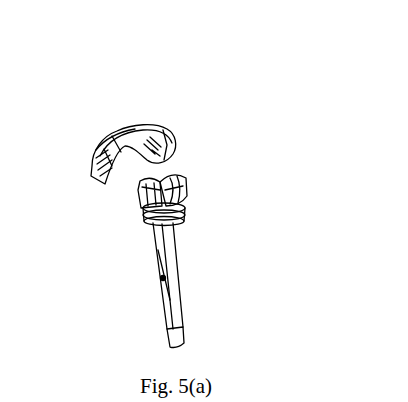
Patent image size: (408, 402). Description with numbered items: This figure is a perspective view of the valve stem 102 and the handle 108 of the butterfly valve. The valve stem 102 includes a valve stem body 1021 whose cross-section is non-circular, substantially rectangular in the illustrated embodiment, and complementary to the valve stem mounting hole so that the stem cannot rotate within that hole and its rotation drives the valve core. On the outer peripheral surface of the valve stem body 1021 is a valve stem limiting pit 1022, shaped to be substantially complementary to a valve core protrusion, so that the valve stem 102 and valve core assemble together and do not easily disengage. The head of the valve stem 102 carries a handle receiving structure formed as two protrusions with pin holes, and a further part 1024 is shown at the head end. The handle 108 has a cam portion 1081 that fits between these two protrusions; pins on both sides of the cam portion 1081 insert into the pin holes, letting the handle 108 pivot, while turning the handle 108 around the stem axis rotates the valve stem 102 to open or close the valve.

The handle 108 is at (143, 128).
The cam portion 1081 is at (137, 132).
The nut 1024 is at (182, 172).
The valve stem 102 is at (189, 250).
The valve stem body 1021 is at (167, 270).
The valve stem limiting pit 1022 is at (160, 283).